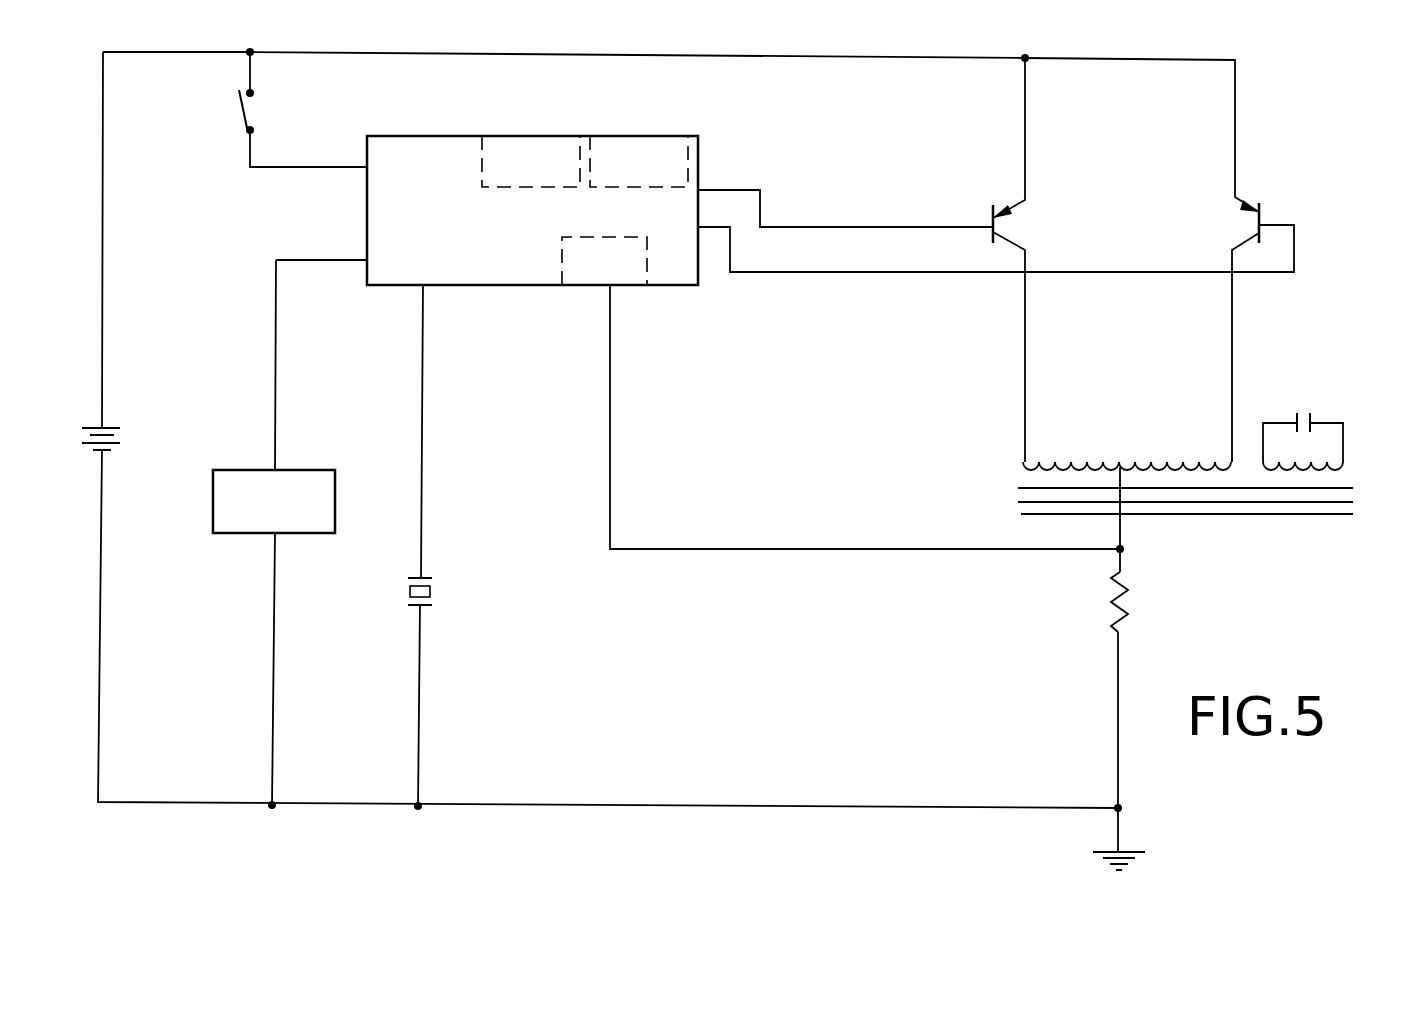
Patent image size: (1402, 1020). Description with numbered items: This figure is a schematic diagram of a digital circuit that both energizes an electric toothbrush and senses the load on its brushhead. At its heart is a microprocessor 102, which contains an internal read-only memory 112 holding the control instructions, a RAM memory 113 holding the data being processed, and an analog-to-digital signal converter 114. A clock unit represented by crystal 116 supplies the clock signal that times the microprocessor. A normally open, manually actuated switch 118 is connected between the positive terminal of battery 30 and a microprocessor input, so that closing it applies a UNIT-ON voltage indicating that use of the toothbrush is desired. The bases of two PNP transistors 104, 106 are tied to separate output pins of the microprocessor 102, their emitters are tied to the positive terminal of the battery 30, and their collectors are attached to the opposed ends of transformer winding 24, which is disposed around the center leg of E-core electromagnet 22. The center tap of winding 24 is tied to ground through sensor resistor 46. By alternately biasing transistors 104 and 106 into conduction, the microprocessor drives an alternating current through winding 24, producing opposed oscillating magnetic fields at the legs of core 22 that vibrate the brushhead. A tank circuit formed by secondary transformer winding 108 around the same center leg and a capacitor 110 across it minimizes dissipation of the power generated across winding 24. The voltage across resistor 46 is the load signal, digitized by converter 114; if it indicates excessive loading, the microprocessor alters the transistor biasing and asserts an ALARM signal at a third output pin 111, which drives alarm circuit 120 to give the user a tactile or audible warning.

The E-core electromagnet 22 is at (1235, 515).
The transformer winding 24 is at (1078, 463).
The battery 30 is at (112, 428).
The sensor resistor 46 is at (1127, 605).
The microprocessor 102 is at (477, 255).
The PNP transistor 104 is at (993, 222).
The PNP transistor 106 is at (1260, 213).
The secondary transformer winding 108 is at (1320, 465).
The capacitor 110 is at (1310, 414).
The third output pin 111 is at (312, 262).
The read-only memory 112 is at (620, 189).
The RAM memory 113 is at (482, 158).
The analog-to-digital signal converter 114 is at (647, 262).
The crystal 116 is at (432, 592).
The manually actuated switch 118 is at (250, 112).
The alarm circuit 120 is at (318, 533).